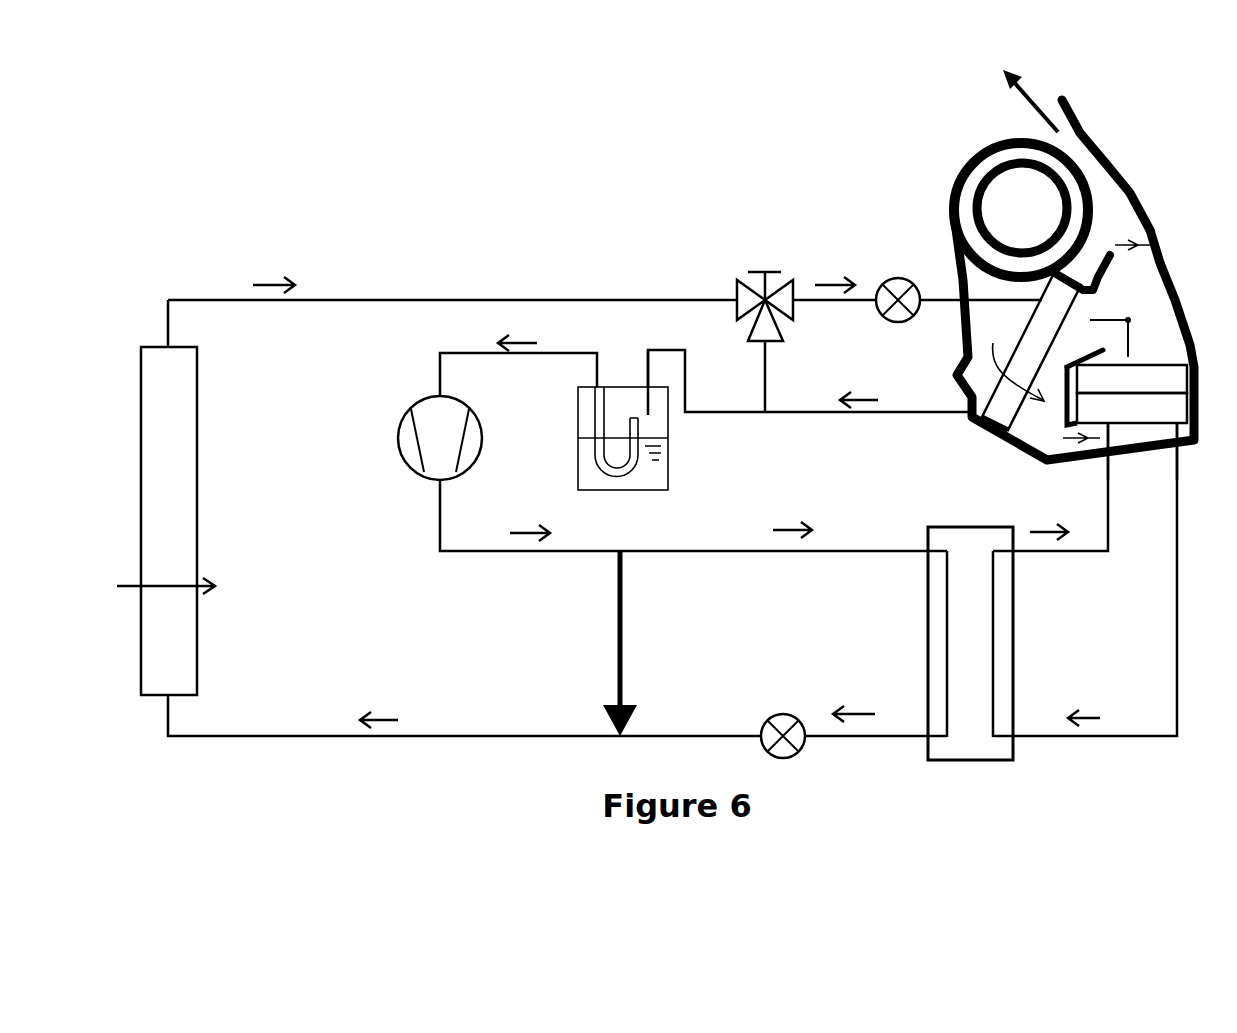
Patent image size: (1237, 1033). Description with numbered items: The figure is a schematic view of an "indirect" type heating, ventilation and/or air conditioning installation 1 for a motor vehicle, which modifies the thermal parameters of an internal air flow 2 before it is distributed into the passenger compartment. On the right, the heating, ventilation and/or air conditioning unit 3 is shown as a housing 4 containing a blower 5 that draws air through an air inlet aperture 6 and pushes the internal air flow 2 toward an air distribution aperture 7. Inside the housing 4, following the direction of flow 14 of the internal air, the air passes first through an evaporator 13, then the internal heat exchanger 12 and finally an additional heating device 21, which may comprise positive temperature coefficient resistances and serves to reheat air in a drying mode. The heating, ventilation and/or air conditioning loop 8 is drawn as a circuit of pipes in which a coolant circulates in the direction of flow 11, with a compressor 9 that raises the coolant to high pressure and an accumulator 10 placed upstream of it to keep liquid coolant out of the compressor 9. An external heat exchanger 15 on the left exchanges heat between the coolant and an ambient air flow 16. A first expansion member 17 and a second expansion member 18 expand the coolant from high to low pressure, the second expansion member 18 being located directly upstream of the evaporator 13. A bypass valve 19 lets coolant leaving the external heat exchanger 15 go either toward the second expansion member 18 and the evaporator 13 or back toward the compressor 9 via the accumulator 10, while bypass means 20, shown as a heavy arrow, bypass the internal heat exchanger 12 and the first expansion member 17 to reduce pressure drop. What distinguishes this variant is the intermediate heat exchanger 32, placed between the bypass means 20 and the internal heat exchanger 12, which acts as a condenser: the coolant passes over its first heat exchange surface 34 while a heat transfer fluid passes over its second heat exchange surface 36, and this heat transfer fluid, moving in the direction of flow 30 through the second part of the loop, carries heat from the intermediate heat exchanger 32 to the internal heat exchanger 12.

The heating, ventilation and/or air conditioning installation 1 is at (598, 200).
The internal air flow 2 is at (1030, 88).
The heating, ventilation and/or air conditioning unit 3 is at (1110, 132).
The housing 4 is at (1153, 222).
The blower 5 is at (980, 284).
The air inlet aperture 6 is at (1015, 211).
The air distribution aperture 7 is at (1037, 121).
The heating, ventilation and/or air conditioning loop 8 is at (375, 274).
The compressor 9 is at (398, 437).
The accumulator 10 is at (669, 470).
The direction of flow of the coolant 11 is at (293, 282).
The internal heat exchanger 12 is at (1131, 416).
The evaporator 13 is at (1026, 346).
The direction of flow of the internal air flow 14 is at (1012, 360).
The external heat exchanger 15 is at (158, 481).
The ambient air flow 16 is at (214, 584).
The first expansion member 17 is at (786, 713).
The second expansion member 18 is at (902, 278).
The bypass valve 19 is at (762, 270).
The bypass means 20 is at (616, 628).
The additional heating device 21 is at (1131, 388).
The direction of flow of the heat transfer fluid 30 is at (1068, 530).
The intermediate heat exchanger 32 is at (931, 762).
The first heat exchange surface 34 is at (957, 565).
The second heat exchange surface 36 is at (993, 716).